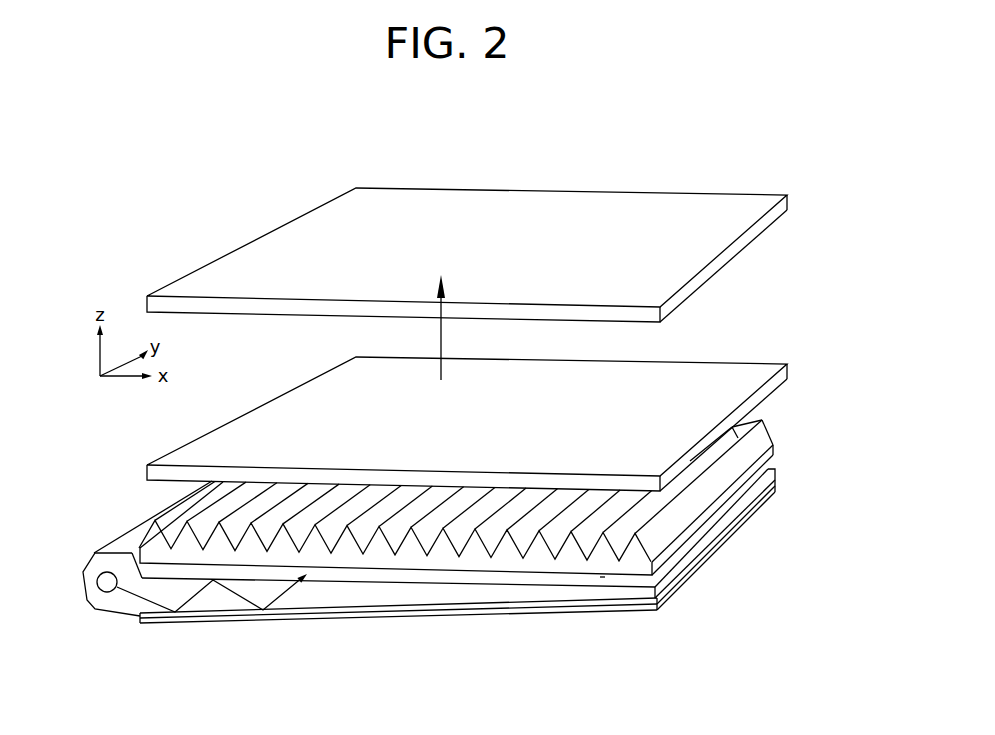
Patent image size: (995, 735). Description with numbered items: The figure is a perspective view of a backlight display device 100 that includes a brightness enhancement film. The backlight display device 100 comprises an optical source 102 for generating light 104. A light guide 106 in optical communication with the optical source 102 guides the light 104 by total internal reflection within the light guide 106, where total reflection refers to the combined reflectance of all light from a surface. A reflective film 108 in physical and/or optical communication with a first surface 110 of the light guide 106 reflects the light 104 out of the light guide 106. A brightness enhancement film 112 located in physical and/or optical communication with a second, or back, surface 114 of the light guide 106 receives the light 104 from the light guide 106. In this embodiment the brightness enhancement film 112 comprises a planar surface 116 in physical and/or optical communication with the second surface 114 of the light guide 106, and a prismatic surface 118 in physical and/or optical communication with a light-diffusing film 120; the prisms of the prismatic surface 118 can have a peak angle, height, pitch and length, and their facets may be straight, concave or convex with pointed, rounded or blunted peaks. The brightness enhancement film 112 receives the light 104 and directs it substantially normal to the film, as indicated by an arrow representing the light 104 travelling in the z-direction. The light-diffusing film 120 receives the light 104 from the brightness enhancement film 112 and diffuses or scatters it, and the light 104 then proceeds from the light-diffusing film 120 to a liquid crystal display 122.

The backlight display device 100 is at (300, 178).
The optical source 102 is at (107, 571).
The light 104 is at (444, 338).
The light guide 106 is at (215, 597).
The reflective film 108 is at (425, 621).
The first surface 110 is at (528, 604).
The brightness enhancement film 112 is at (772, 422).
The second surface 114 is at (157, 571).
The planar surface 116 is at (600, 577).
The prismatic surface 118 is at (638, 549).
The light-diffusing film 120 is at (735, 368).
The liquid crystal display 122 is at (650, 197).